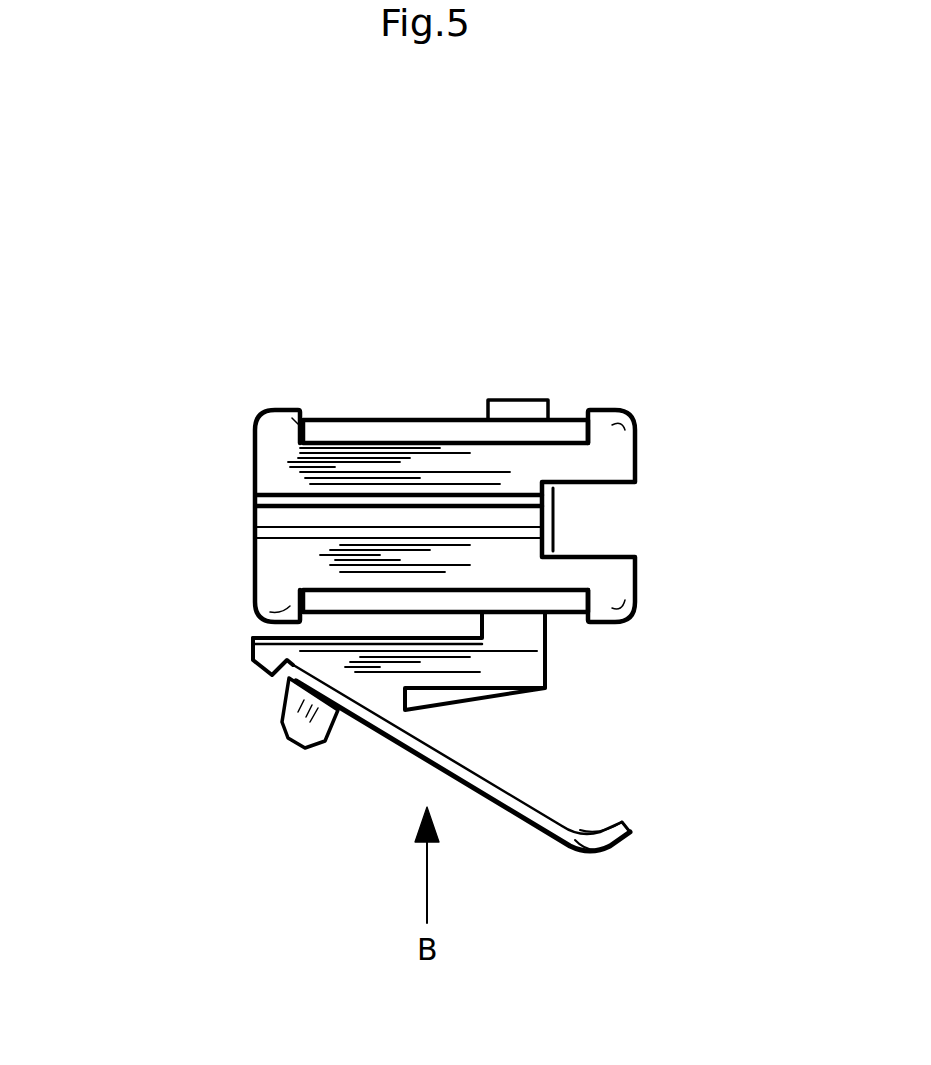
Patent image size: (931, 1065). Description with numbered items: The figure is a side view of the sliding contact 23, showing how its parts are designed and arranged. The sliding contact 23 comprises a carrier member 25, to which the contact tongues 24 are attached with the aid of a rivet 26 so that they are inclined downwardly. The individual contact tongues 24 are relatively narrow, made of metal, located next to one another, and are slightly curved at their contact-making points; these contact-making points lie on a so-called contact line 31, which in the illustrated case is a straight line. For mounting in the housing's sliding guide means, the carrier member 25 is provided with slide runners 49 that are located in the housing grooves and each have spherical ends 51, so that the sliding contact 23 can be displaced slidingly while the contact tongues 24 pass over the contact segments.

The sliding contact 23 is at (548, 365).
The contact tongues 24 is at (553, 810).
The carrier member 25 is at (520, 672).
The rivet 26 is at (293, 713).
The contact line 31 is at (597, 872).
The slide runners 49 is at (408, 558).
The spherical ends 51 is at (283, 447).